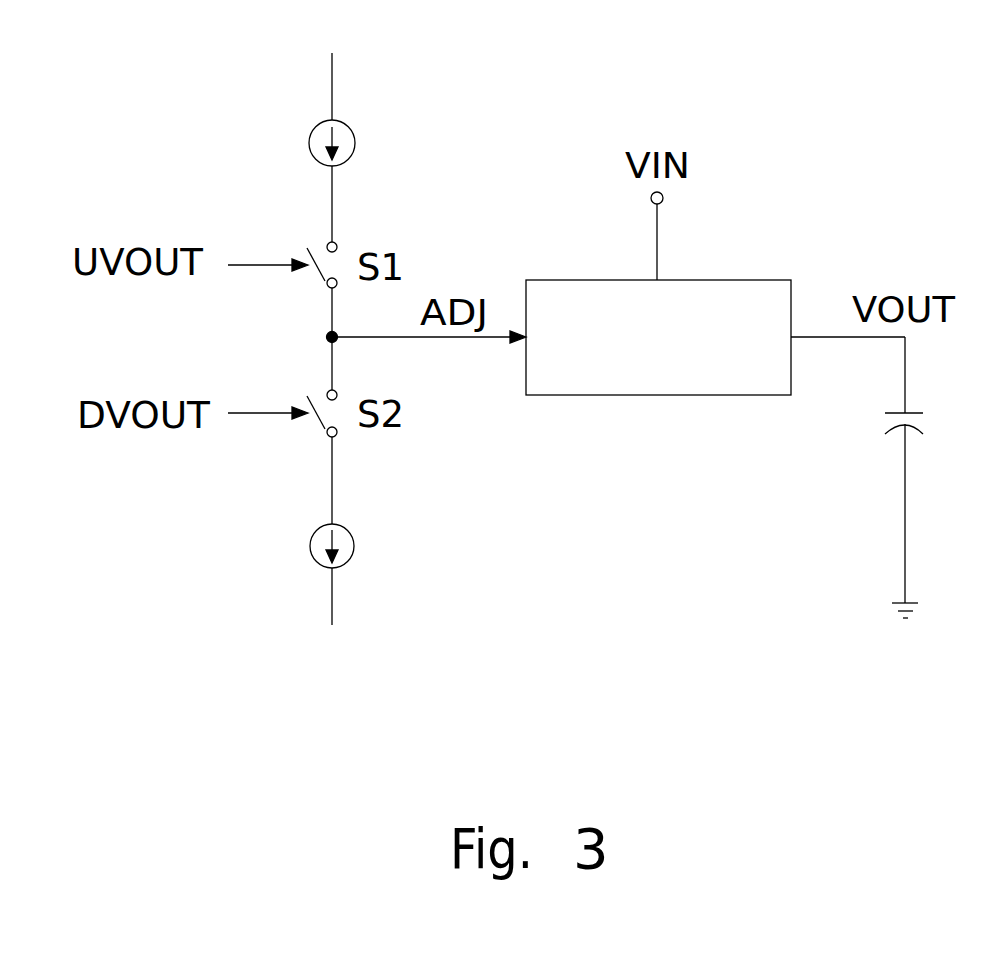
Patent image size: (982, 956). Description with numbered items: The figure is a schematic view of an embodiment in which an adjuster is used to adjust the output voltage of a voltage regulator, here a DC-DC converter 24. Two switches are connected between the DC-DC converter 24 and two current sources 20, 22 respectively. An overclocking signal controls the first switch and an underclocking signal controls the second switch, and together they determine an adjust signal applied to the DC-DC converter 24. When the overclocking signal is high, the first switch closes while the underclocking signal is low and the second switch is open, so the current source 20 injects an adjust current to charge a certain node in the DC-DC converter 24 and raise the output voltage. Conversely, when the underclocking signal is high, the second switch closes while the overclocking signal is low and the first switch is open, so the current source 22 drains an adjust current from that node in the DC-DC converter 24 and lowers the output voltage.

The current source 20 is at (350, 127).
The current source 22 is at (355, 529).
The DC-DC converter 24 is at (728, 280).